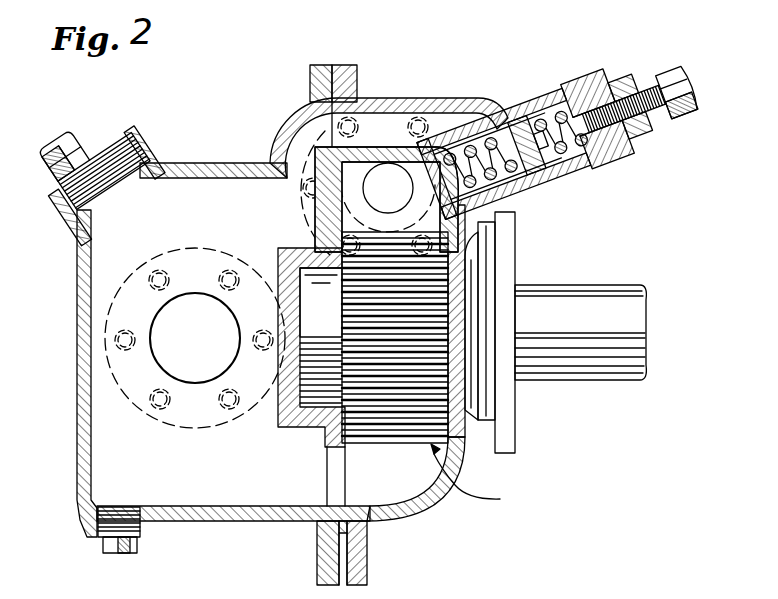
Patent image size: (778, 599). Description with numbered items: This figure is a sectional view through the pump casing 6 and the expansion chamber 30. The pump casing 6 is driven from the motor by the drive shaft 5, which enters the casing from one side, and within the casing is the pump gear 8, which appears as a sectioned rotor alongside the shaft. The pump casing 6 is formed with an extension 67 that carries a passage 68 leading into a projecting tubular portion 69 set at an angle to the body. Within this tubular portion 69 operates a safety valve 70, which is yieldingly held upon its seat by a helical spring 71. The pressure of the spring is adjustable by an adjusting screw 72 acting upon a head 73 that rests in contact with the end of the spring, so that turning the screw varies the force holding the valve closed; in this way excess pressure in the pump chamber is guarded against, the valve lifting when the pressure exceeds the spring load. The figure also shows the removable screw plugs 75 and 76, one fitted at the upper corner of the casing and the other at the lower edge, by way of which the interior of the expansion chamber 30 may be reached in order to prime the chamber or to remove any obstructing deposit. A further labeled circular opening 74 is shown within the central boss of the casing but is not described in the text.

The drive shaft 5 is at (633, 308).
The pump casing 6 is at (440, 497).
The pump gear 8 is at (415, 440).
The expansion chamber 30 is at (193, 165).
The extension 67 is at (452, 104).
The passage 68 is at (398, 125).
The projecting tubular portion 69 is at (597, 176).
The safety valve 70 is at (516, 190).
The helical spring 71 is at (565, 172).
The adjusting screw 72 is at (667, 82).
The head 73 is at (553, 106).
The port 74 is at (443, 193).
The removable screw plug 75 is at (101, 140).
The removable screw plug 76 is at (138, 546).